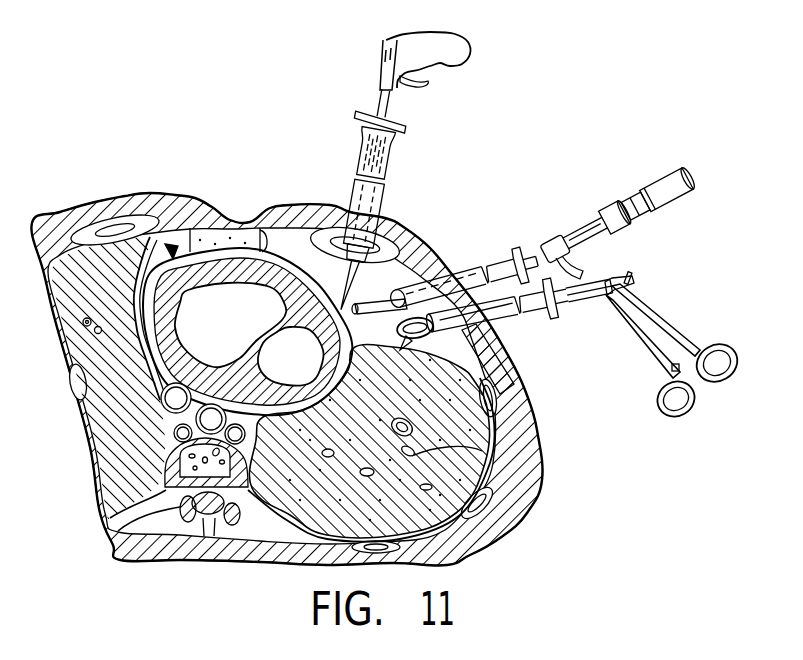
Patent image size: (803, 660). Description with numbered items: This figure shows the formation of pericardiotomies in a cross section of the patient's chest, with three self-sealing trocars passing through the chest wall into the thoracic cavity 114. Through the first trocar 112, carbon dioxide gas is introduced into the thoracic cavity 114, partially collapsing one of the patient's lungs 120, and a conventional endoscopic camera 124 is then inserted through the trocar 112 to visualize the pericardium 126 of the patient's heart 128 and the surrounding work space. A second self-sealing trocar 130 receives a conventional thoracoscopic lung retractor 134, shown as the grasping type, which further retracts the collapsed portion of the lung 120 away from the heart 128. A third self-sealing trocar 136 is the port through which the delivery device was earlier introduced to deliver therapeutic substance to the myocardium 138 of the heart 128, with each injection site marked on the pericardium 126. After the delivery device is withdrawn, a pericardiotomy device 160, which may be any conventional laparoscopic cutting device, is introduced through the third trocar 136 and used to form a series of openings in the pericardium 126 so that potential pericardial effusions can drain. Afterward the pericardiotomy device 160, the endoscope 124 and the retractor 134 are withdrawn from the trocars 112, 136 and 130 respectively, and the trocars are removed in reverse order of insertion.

The trocar 112 is at (410, 130).
The pericardiotomy device 160 is at (473, 48).
The thoracic cavity 114 is at (428, 237).
The third self-sealing trocar 136 is at (517, 242).
The endoscopic camera 124 is at (668, 162).
The thoracoscopic lung retractor 134 is at (642, 313).
The lung 120 is at (500, 356).
The second self-sealing trocar 130 is at (540, 323).
The heart 128 is at (170, 250).
The pericardium 126 is at (190, 250).
The myocardium 138 is at (258, 252).